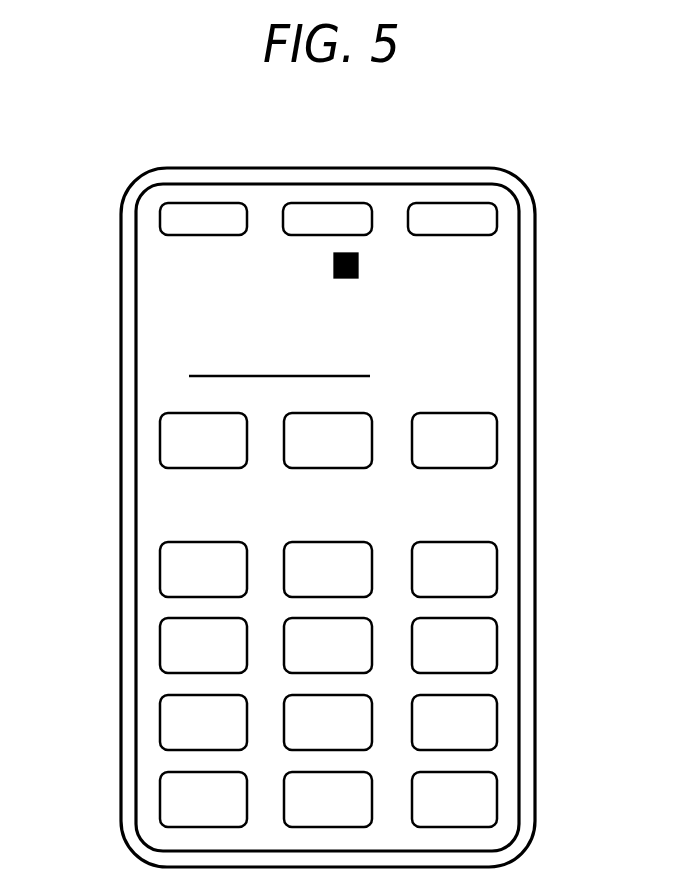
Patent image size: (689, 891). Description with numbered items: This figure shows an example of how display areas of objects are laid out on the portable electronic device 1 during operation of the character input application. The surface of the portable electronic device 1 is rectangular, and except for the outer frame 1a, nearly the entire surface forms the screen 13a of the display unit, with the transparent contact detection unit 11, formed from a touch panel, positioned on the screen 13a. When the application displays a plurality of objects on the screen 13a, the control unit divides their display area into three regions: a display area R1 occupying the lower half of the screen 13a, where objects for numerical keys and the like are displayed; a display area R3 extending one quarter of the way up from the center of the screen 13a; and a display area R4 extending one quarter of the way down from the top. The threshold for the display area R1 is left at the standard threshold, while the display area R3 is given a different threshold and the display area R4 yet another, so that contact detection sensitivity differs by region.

The portable electronic device 1 is at (412, 155).
The outer frame 1a is at (283, 168).
The contact detection unit 11 is at (149, 531).
The screen 13a is at (170, 488).
The display area R1 is at (547, 528).
The display area R3 is at (547, 397).
The display area R4 is at (547, 180).